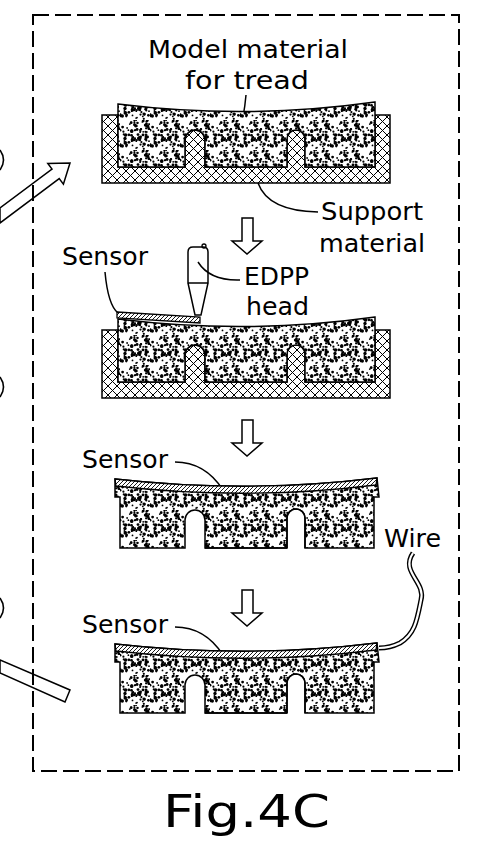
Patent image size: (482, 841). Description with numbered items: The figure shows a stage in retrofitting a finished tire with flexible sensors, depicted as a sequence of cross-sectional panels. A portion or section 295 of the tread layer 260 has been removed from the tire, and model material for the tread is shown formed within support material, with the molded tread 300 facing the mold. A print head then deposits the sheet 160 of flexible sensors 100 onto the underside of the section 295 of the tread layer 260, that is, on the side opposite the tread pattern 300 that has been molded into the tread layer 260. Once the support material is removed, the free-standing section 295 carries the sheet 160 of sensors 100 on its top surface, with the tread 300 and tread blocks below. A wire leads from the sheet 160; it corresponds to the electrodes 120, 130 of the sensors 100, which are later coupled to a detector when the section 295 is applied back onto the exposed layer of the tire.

The portion or section of the tread layer 295 is at (160, 127).
The flexible sensor 100 is at (245, 430).
The sheet of sensors 160 is at (182, 316).
The tread layer 260 is at (243, 556).
The tread pattern 300 is at (289, 528).
The electrode 120 is at (400, 657).
The electrode 130 is at (408, 656).